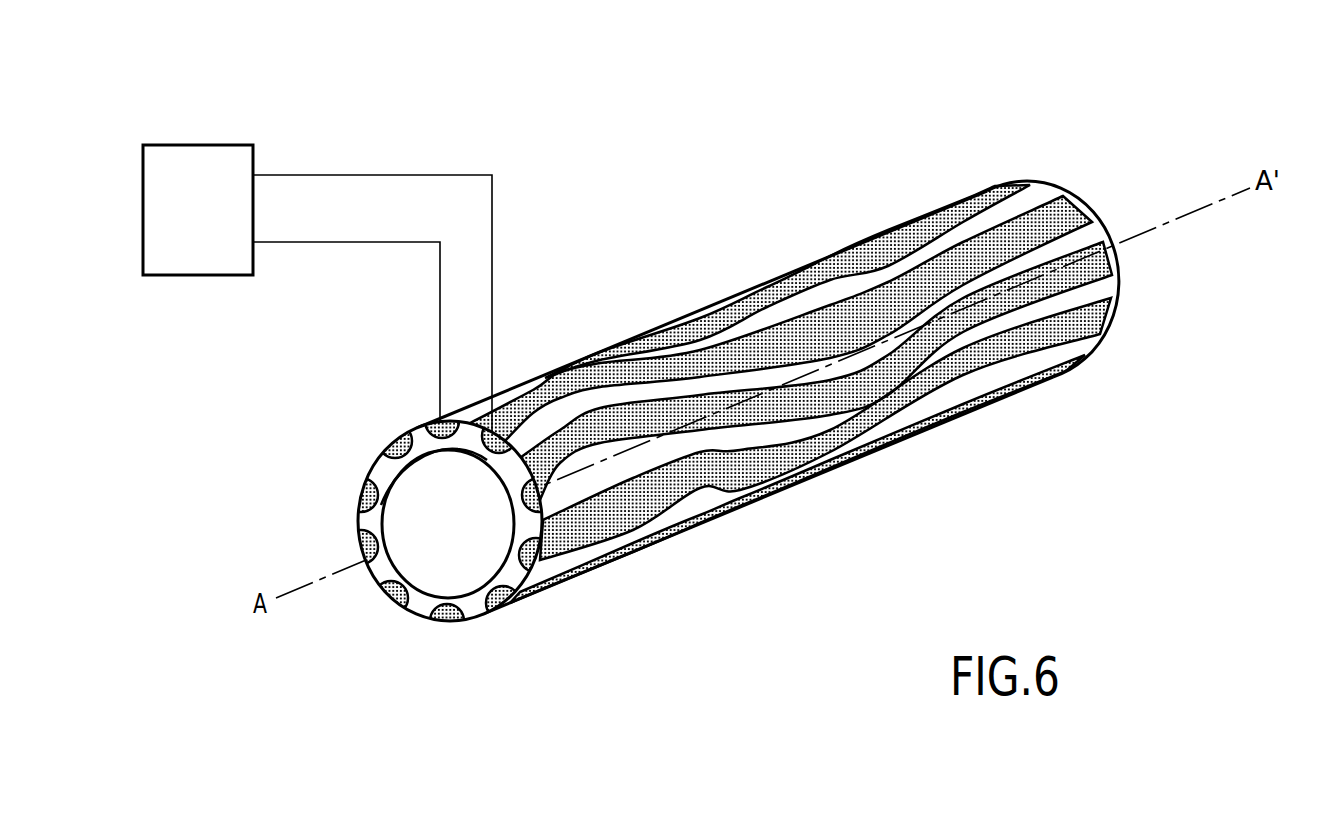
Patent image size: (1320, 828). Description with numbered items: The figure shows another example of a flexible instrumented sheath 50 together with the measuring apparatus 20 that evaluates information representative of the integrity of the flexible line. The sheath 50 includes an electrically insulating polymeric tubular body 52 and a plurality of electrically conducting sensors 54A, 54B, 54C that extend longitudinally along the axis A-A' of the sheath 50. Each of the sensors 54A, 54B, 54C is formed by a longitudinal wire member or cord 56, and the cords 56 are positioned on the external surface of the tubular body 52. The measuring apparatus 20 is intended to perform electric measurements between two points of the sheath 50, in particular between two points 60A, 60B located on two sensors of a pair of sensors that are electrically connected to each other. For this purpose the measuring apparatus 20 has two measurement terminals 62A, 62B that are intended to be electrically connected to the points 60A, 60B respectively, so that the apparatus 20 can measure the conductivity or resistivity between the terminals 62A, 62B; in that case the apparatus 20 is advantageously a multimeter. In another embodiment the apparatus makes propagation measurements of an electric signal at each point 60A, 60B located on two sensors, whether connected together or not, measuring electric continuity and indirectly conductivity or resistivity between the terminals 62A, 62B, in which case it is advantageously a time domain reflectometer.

The measuring apparatus 20 is at (185, 141).
The measurement terminal 62A is at (259, 248).
The measurement terminal 62B is at (259, 170).
The instrumented sheath 50 is at (718, 414).
The tubular body 52 is at (426, 545).
The electrically conducting sensor 54A is at (888, 252).
The electrically conducting sensor 54B is at (1018, 266).
The electrically conducting sensor 54C is at (853, 395).
The cord 56 is at (736, 315).
The measurement point 60A is at (382, 452).
The measurement point 60B is at (383, 516).